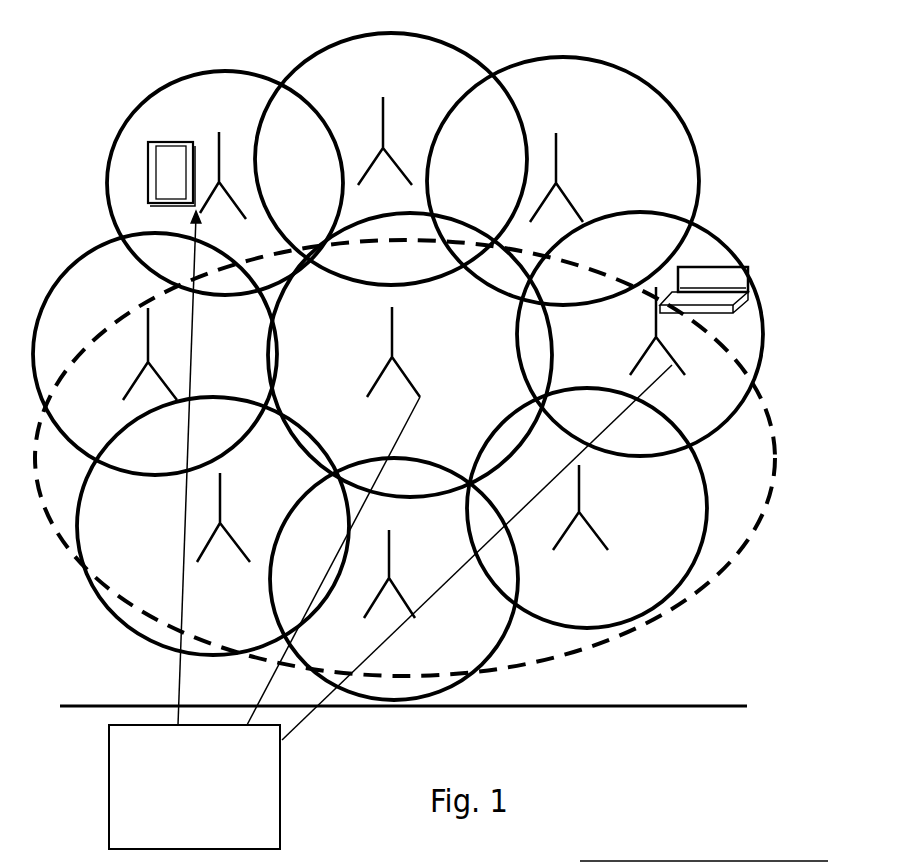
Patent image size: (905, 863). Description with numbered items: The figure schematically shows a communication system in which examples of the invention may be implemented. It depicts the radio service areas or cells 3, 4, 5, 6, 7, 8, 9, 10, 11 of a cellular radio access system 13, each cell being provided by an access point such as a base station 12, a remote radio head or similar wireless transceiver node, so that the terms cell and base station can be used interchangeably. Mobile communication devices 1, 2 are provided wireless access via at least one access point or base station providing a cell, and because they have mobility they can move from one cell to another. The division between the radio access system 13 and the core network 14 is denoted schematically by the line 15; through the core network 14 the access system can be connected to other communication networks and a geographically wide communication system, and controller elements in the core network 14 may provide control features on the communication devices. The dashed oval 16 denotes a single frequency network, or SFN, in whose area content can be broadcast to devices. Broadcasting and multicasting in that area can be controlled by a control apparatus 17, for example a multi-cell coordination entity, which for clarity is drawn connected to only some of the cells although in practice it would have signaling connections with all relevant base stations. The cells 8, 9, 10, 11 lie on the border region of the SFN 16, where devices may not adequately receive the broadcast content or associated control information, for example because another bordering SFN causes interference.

The mobile communication device 1 is at (703, 268).
The mobile communication device 2 is at (145, 173).
The cell 3 is at (183, 537).
The cell 4 is at (247, 341).
The cell 5 is at (367, 359).
The cell 6 is at (450, 537).
The cell 7 is at (681, 551).
The cell 8 is at (632, 351).
The cell 9 is at (644, 139).
The cell 10 is at (420, 82).
The cell 11 is at (228, 119).
The base station 12 is at (228, 197).
The radio access system 13 is at (808, 691).
The core network 14 is at (765, 747).
The line 15 is at (468, 708).
The single frequency network (SFN) 16 is at (713, 583).
The control apparatus 17 is at (390, 530).